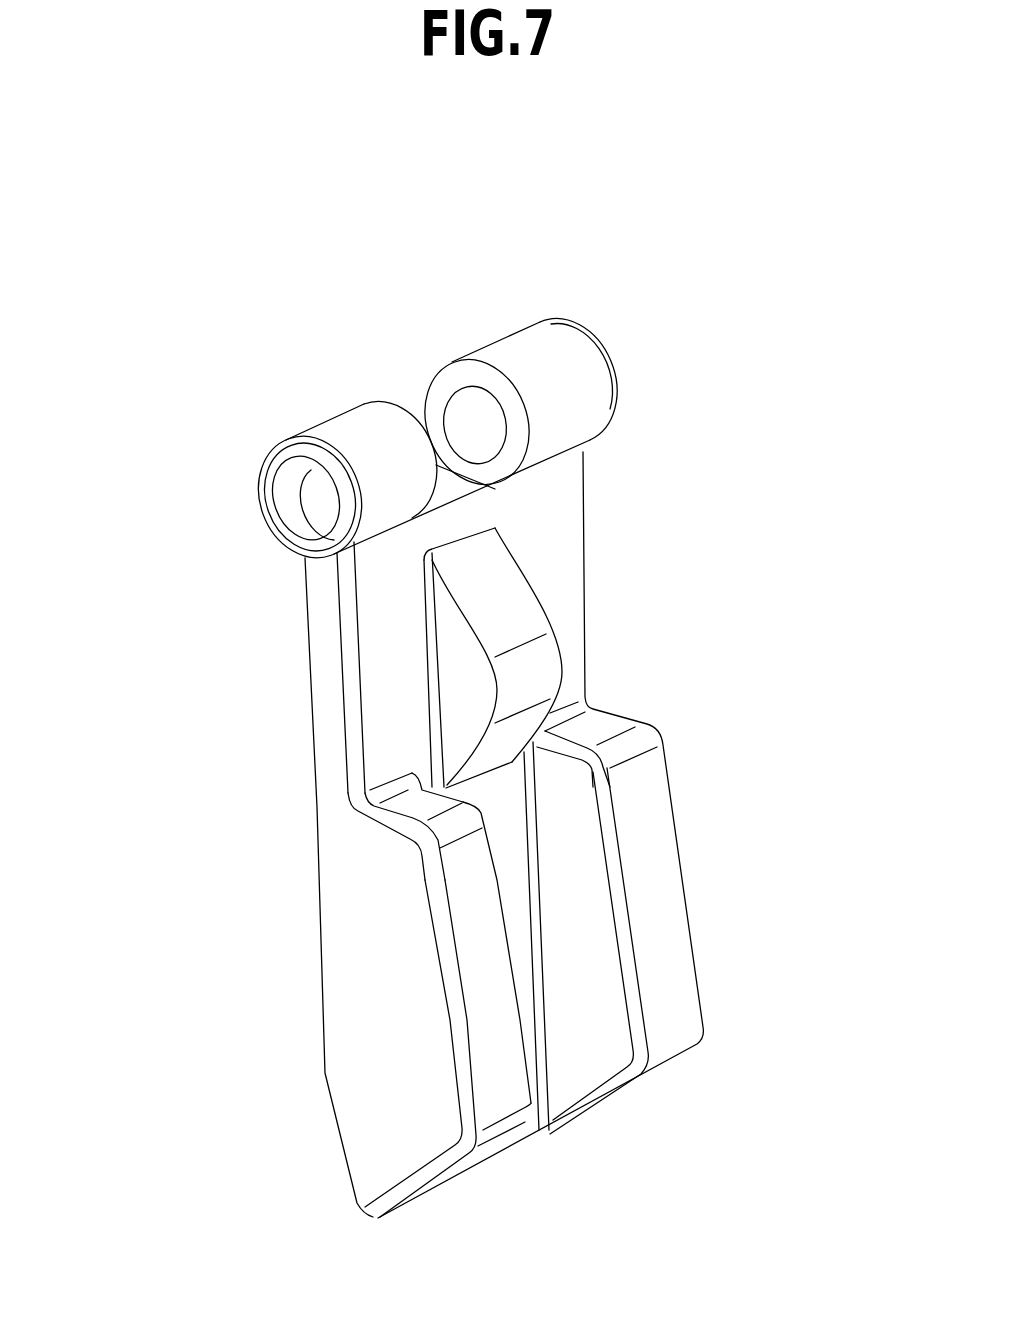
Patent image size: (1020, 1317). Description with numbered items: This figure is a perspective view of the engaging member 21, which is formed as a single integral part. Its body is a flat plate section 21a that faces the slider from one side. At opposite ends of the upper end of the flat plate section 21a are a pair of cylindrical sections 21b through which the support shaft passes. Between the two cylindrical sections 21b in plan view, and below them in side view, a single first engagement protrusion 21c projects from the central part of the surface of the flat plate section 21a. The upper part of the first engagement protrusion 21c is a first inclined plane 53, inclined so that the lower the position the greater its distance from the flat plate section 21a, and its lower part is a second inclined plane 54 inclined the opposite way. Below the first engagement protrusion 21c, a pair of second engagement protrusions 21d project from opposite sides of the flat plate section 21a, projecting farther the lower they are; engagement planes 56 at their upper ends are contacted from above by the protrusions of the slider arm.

The engaging member 21 is at (292, 750).
The flat plate section 21a is at (573, 575).
The cylindrical sections 21b is at (355, 428).
The first engagement protrusion 21c is at (463, 699).
The second engagement protrusions 21d is at (357, 1110).
The first inclined plane 53 is at (527, 632).
The second inclined plane 54 is at (512, 750).
The engagement planes 56 is at (615, 726).